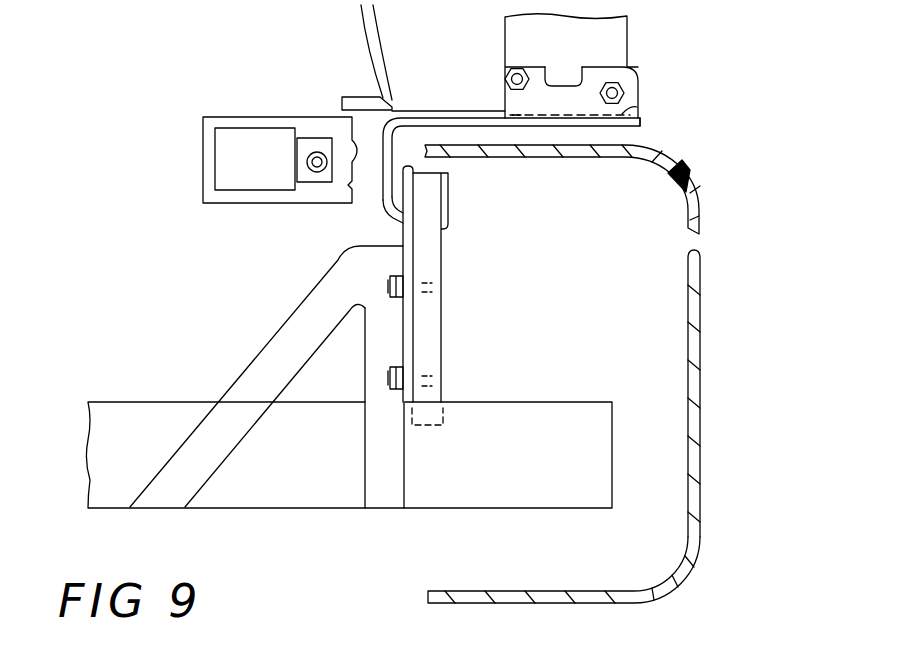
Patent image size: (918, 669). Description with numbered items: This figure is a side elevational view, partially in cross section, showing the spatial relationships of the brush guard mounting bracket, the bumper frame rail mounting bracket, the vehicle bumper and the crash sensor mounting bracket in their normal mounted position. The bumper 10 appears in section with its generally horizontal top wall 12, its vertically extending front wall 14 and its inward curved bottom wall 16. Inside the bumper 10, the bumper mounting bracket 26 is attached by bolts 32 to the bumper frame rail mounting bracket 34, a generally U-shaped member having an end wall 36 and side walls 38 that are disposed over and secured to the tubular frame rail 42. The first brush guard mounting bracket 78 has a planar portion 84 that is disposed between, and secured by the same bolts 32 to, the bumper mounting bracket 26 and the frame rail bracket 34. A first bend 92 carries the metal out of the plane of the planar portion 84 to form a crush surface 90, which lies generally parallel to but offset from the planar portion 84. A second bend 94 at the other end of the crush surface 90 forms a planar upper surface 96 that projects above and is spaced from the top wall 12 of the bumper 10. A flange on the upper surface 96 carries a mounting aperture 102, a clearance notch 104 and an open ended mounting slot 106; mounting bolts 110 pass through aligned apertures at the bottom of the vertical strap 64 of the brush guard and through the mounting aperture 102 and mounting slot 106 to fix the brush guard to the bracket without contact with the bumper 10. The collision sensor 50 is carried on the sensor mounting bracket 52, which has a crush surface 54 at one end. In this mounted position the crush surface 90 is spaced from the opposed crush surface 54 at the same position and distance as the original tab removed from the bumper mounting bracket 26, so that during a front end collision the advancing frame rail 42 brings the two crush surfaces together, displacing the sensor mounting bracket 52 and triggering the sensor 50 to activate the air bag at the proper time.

The bumper 10 is at (716, 360).
The top wall 12 is at (678, 162).
The front wall 14 is at (688, 337).
The bottom wall 16 is at (640, 590).
The bumper mounting bracket 26 is at (438, 355).
The bolts 32 is at (390, 283).
The bumper frame rail mounting bracket 34 is at (236, 366).
The end wall 36 is at (405, 480).
The side walls 38 is at (368, 480).
The frame rail 42 is at (552, 498).
The collision sensor 50 is at (232, 150).
The sensor mounting bracket 52 is at (247, 117).
The crush surface 54 is at (350, 130).
The vertical strap 64 is at (627, 46).
The first brush guard mounting bracket 78 is at (467, 110).
The planar portion 84 is at (415, 318).
The crush surface 90 is at (387, 158).
The first bend 92 is at (388, 215).
The second bend 94 is at (383, 97).
The upper surface 96 is at (640, 114).
The mounting aperture 102 is at (640, 100).
The clearance notch 104 is at (567, 72).
The mounting slot 106 is at (517, 66).
The mounting bolts 110 is at (507, 76).